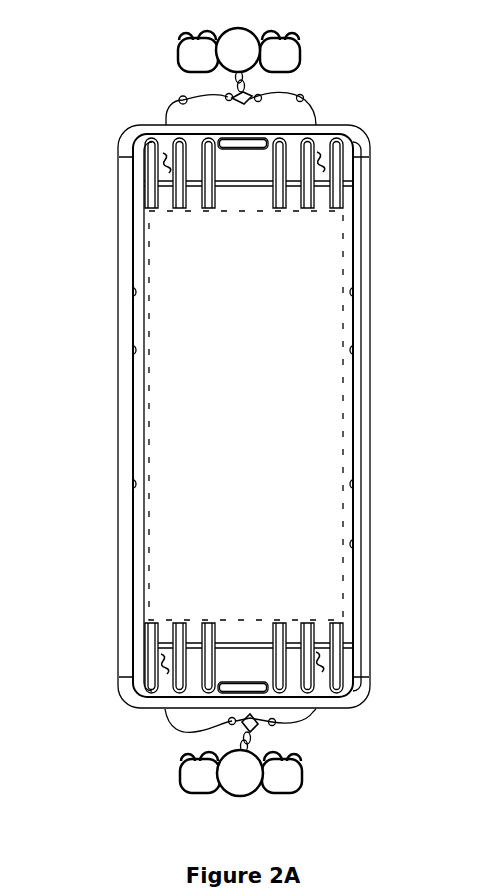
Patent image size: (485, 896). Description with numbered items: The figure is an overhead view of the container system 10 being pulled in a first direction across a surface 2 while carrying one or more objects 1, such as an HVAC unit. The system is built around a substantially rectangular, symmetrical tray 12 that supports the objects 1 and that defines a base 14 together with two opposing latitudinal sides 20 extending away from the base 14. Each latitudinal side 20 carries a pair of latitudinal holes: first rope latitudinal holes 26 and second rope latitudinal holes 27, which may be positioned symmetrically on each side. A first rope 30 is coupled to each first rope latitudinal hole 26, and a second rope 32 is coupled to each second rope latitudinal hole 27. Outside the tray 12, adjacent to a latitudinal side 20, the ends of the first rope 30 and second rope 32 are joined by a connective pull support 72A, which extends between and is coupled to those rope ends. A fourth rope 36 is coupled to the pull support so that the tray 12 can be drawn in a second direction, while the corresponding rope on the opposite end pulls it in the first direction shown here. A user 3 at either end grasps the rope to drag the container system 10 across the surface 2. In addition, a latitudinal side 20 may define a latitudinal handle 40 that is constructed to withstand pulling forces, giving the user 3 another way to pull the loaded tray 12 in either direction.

The object 1 is at (246, 415).
The surface 2 is at (248, 415).
The user 3 is at (240, 412).
The container system 10 is at (68, 274).
The tray 12 is at (373, 150).
The base 14 is at (248, 173).
The latitudinal sides 20 is at (243, 158).
The first rope latitudinal hole 26 is at (162, 666).
The second rope latitudinal hole 27 is at (160, 163).
The first rope 30 is at (178, 731).
The second rope 32 is at (183, 99).
The fourth rope 36 is at (258, 90).
The latitudinal handle 40 is at (255, 689).
The connective pull support 72A is at (236, 92).